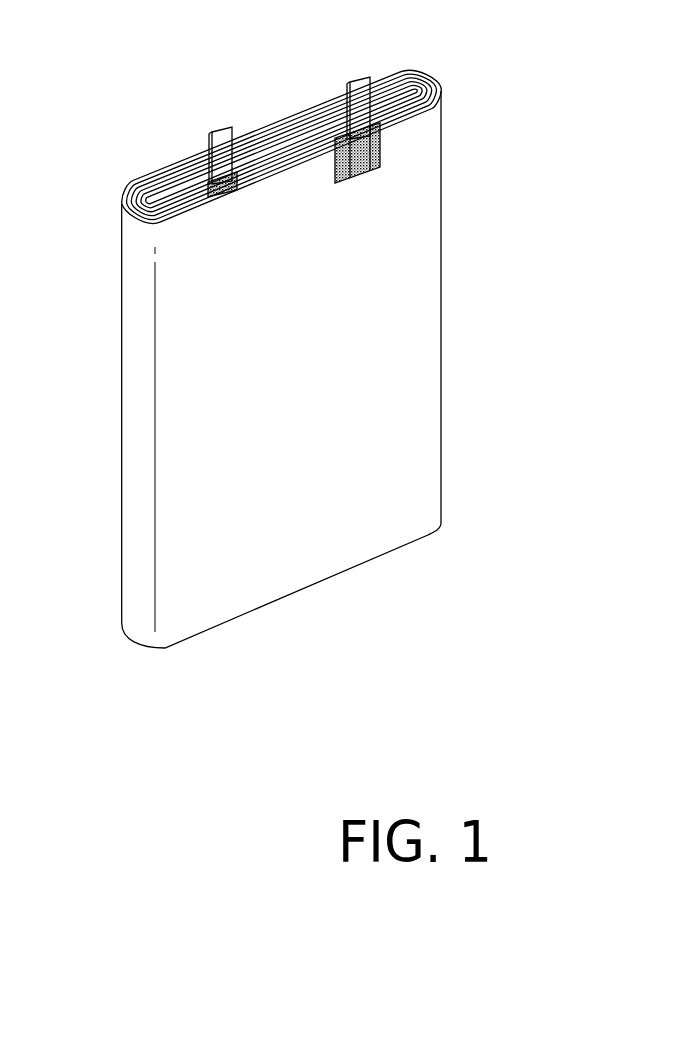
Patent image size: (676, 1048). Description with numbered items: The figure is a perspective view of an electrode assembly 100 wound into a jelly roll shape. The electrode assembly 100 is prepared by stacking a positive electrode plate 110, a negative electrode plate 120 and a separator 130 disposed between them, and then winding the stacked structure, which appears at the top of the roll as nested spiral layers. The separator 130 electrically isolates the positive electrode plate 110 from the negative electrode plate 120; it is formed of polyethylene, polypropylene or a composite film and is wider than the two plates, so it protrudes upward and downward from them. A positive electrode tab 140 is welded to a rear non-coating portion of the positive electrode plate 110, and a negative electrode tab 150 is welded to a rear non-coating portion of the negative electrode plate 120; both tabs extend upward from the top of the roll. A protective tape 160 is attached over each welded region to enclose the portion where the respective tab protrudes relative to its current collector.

The electrode assembly 100 is at (52, 58).
The positive electrode plate 110 is at (443, 87).
The negative electrode plate 120 is at (297, 119).
The separator 130 is at (433, 78).
The positive electrode tab 140 is at (360, 83).
The negative electrode tab 150 is at (223, 135).
The protective tape 160 is at (380, 150).